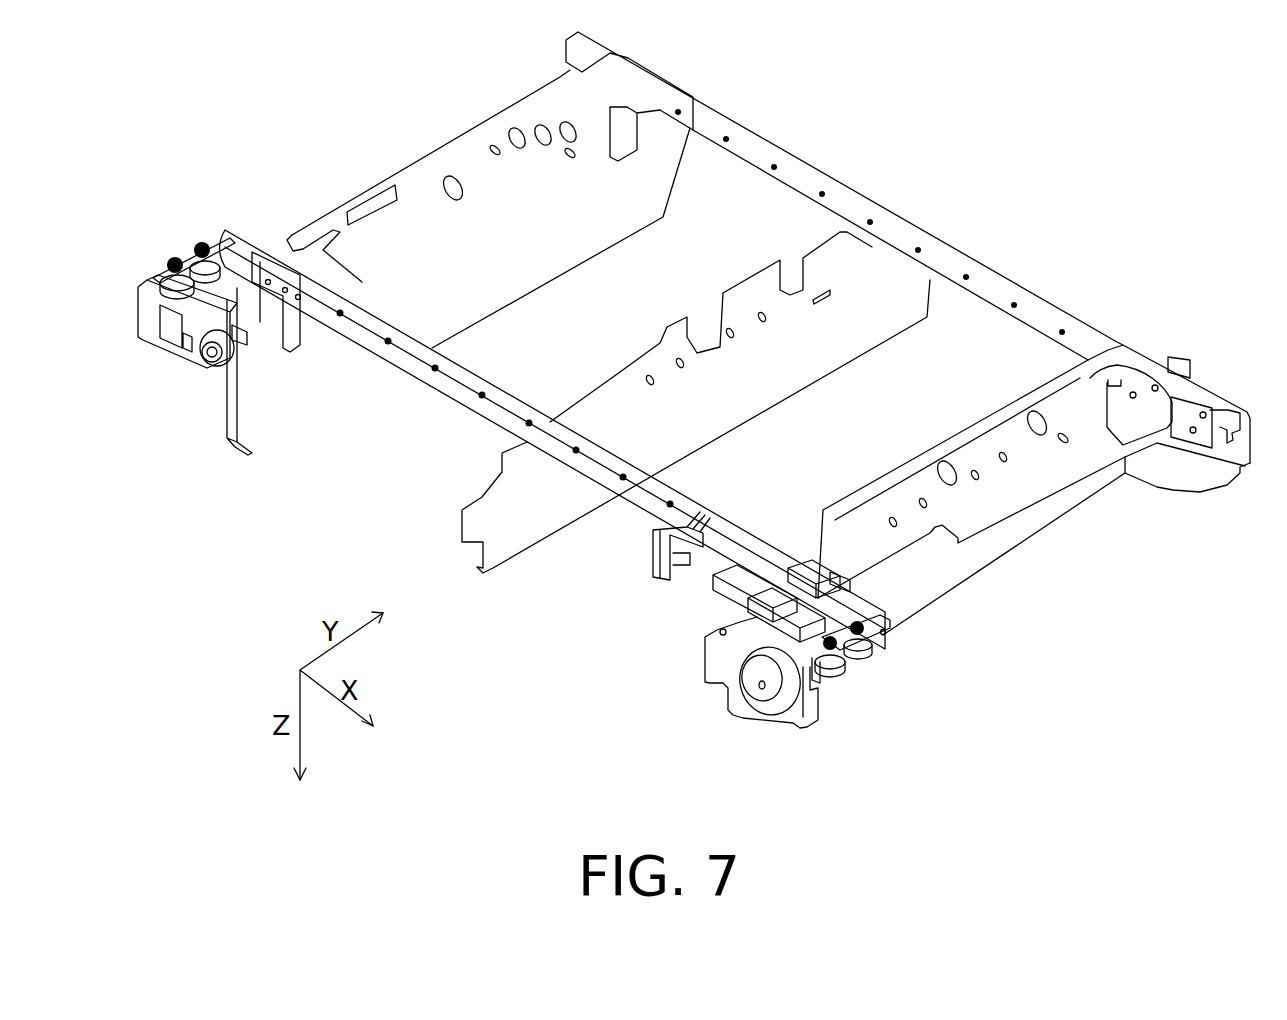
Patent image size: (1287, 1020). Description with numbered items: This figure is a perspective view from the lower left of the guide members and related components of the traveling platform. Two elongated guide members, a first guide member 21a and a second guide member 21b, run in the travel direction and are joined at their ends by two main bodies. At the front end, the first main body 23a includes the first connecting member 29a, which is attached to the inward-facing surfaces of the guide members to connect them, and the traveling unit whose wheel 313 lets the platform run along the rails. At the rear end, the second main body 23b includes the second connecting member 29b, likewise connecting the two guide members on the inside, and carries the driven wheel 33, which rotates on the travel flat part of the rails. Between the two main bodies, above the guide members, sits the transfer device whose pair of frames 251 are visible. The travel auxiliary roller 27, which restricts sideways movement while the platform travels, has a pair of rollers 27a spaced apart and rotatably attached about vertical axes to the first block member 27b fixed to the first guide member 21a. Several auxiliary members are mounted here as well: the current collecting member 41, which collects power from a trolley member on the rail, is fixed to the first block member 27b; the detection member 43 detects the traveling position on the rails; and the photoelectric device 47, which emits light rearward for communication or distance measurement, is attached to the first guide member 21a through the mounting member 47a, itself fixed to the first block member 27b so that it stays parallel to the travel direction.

The first guide member 21a is at (450, 400).
The second guide member 21b is at (810, 176).
The first main body 23a is at (1045, 640).
The second main body 23b is at (355, 100).
The first connecting member 29a is at (1022, 540).
The second connecting member 29b is at (500, 130).
The frames 251 is at (618, 392).
The travel auxiliary roller 27 is at (190, 160).
The rollers 27a is at (178, 272).
The first block member 27b is at (283, 268).
The photoelectric device 47 is at (165, 338).
The mounting member 47a is at (268, 335).
The driven wheel 33 is at (230, 358).
The detection member 43 is at (650, 577).
The current collecting member 41 is at (763, 660).
The wheel 313 is at (767, 700).